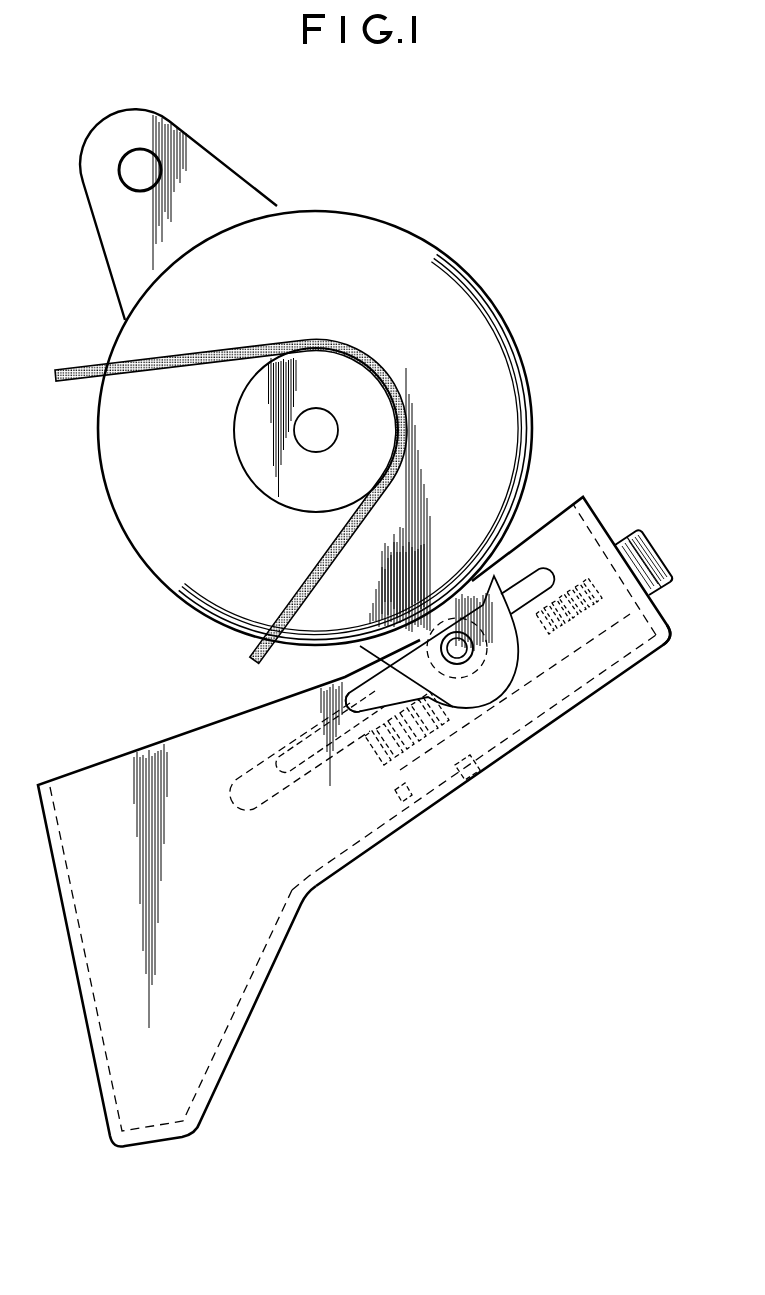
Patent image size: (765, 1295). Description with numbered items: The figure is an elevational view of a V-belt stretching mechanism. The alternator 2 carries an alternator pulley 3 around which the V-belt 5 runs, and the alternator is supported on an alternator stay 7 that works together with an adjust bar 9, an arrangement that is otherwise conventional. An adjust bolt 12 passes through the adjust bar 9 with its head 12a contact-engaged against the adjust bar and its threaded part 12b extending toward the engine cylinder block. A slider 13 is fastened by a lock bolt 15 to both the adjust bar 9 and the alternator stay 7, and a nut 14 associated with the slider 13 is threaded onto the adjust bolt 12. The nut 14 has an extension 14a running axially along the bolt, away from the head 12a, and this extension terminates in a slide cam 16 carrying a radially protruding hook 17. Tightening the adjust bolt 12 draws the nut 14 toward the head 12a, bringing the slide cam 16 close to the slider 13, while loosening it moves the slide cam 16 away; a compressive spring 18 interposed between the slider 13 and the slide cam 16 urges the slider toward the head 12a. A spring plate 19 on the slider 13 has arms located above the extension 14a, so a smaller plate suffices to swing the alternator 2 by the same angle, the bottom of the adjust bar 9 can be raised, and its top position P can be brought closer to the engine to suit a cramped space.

The alternator 2 is at (504, 334).
The alternator pulley 3 is at (243, 426).
The V-belt 5 is at (231, 500).
The alternator stay 7 is at (500, 566).
The adjust bar 9 is at (296, 905).
The adjust bolt 12 is at (601, 552).
The head 12a is at (640, 557).
The threaded part 12b is at (372, 777).
The slider 13 is at (512, 749).
The nut 14 is at (583, 691).
The extension 14a is at (431, 812).
The lock bolt 15 is at (470, 644).
The slide cam 16 is at (340, 707).
The hook 17 is at (408, 822).
The compressive spring 18 is at (461, 779).
The spring plate 19 is at (250, 776).
The top position of adjust bar P is at (672, 641).